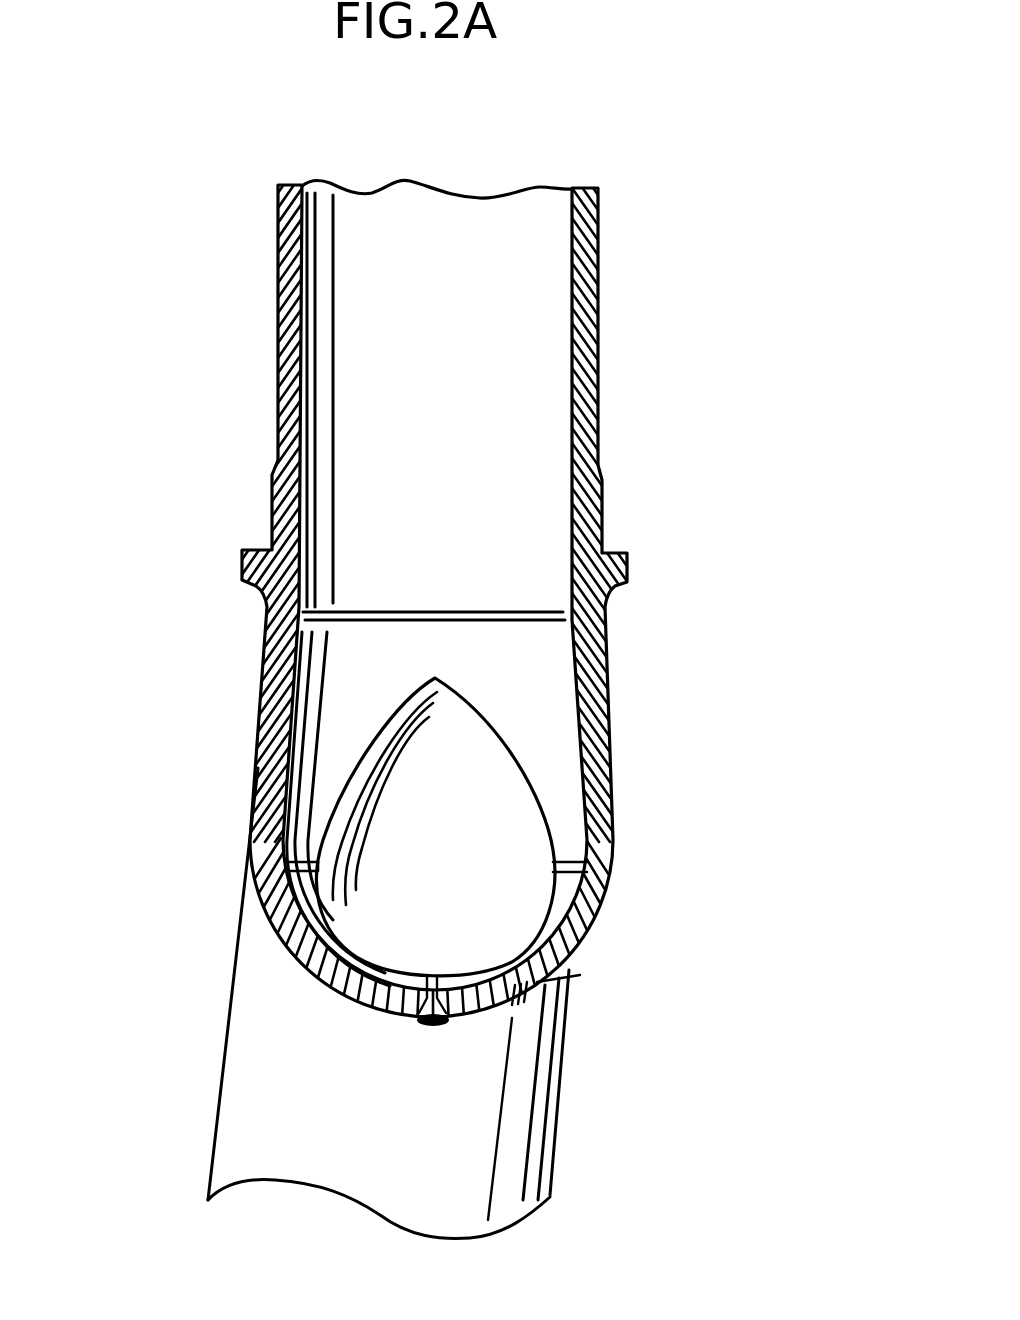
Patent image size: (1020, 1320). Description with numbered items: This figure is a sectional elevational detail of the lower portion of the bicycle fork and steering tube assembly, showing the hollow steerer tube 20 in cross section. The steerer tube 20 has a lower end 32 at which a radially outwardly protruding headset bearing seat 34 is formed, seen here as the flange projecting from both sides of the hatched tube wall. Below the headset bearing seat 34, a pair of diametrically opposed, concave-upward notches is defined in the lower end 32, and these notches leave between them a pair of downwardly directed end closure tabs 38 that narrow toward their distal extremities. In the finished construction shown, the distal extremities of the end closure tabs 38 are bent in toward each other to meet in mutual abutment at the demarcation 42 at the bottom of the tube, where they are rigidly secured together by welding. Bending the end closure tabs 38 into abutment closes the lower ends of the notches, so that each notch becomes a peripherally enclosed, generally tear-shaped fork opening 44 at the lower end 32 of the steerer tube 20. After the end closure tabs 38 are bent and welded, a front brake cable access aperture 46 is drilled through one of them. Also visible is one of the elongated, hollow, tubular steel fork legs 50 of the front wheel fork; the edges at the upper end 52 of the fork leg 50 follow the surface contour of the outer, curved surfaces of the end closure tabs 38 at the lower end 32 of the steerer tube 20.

The hollow steerer tube 20 is at (470, 634).
The lower end 32 is at (574, 875).
The headset bearing seat 34 is at (630, 568).
The end closure tabs 38 is at (298, 975).
The demarcation 42 is at (440, 1024).
The tear-shaped fork openings 44 is at (543, 840).
The front brake cable access aperture 46 is at (537, 981).
The fork legs 50 is at (313, 1003).
The upper end 52 is at (250, 918).